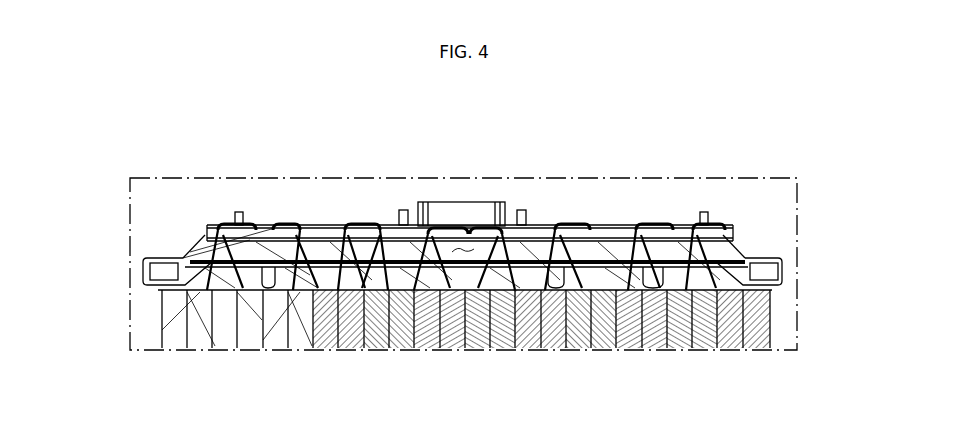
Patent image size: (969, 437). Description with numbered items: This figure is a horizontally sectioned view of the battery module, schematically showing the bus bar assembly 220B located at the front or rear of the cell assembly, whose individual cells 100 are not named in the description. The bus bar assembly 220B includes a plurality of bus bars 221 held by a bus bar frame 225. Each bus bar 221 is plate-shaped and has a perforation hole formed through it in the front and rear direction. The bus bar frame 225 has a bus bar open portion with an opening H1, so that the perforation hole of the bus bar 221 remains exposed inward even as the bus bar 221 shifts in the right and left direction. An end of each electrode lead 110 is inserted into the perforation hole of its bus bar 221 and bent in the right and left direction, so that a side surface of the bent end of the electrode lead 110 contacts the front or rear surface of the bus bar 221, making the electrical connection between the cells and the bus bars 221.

The housing 100 is at (685, 349).
The electrode lead 110 is at (746, 262).
The bus bar 221 is at (276, 228).
The insulating block 220B is at (471, 194).
The bus bar frame 225 is at (141, 256).
The opening H1 is at (460, 253).